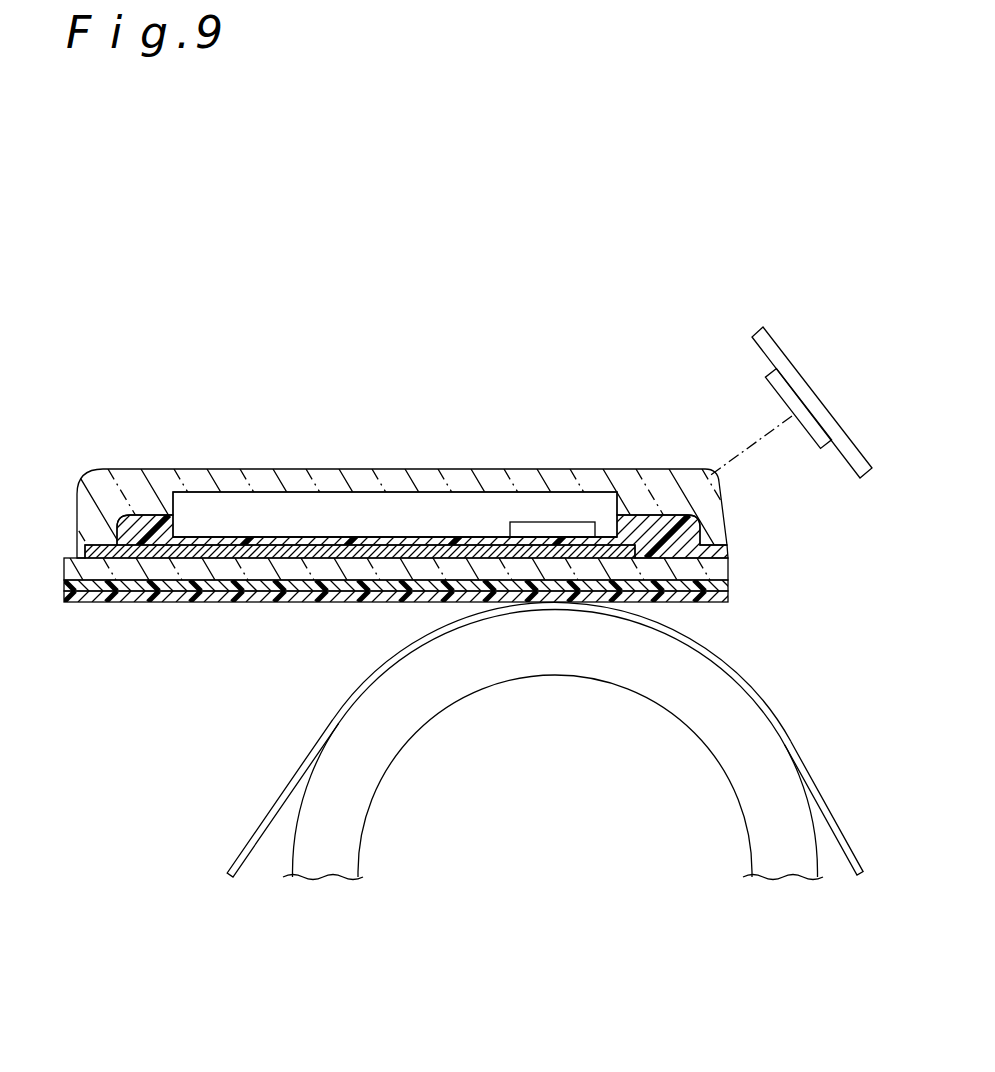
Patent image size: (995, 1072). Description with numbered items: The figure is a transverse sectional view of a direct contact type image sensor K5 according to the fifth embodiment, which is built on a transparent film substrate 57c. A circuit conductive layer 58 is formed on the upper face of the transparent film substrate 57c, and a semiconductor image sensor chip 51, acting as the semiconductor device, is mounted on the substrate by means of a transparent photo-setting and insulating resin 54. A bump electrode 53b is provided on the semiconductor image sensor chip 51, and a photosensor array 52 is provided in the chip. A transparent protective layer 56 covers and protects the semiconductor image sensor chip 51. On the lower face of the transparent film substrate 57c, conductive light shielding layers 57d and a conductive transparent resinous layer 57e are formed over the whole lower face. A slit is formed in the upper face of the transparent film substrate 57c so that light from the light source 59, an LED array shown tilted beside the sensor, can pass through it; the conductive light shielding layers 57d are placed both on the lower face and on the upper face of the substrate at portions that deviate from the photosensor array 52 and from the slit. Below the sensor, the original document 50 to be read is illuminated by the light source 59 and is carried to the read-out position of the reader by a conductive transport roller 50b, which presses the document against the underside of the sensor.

The direct contact type image sensor K5 is at (346, 308).
The original document 50 is at (263, 808).
The conductive transport roller 50b is at (790, 800).
The semiconductor image sensor chip 51 is at (352, 508).
The photosensor array 52 is at (533, 525).
The bump electrode 53b is at (250, 537).
The transparent photo-setting and insulating resin 54 is at (413, 538).
The transparent protective layer 56 is at (472, 471).
The transparent film substrate 57c is at (720, 570).
The conductive light shielding layer 57d is at (728, 552).
The conductive transparent resinous layer 57e is at (228, 602).
The circuit conductive layer 58 is at (100, 545).
The light source 59 is at (765, 348).